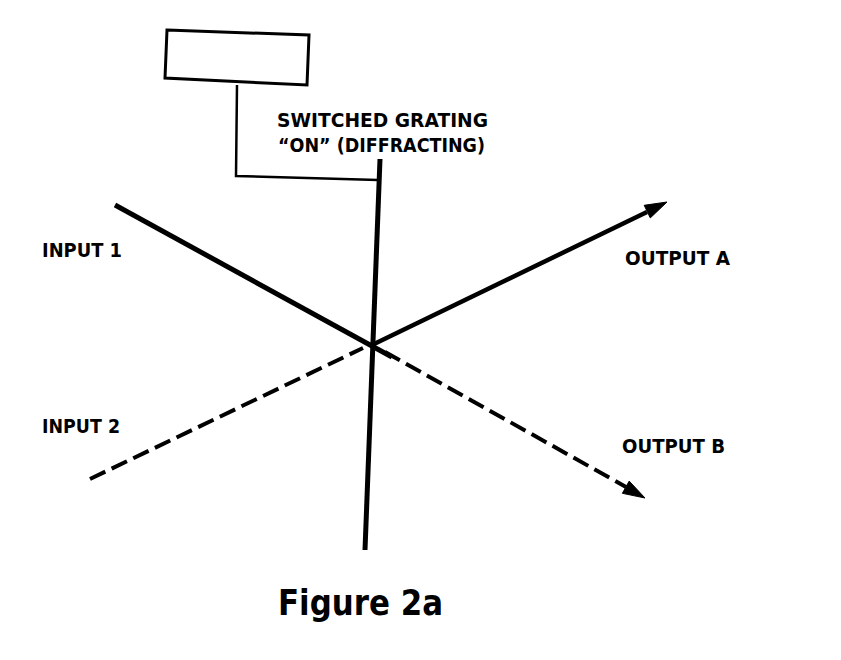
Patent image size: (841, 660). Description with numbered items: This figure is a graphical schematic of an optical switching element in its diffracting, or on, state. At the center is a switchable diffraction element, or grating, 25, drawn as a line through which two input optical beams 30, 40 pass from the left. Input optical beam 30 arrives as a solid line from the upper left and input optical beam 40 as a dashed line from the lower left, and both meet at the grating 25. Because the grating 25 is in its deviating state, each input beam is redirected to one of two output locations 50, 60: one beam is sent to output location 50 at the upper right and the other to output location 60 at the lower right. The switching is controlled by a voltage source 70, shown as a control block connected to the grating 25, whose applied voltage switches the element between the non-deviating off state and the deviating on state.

The switchable diffraction element (grating) 25 is at (362, 463).
The input optical beam 30 is at (180, 240).
The input optical beam 40 is at (160, 450).
The output location 50 is at (578, 245).
The output location 60 is at (530, 437).
The voltage source 70 is at (165, 60).